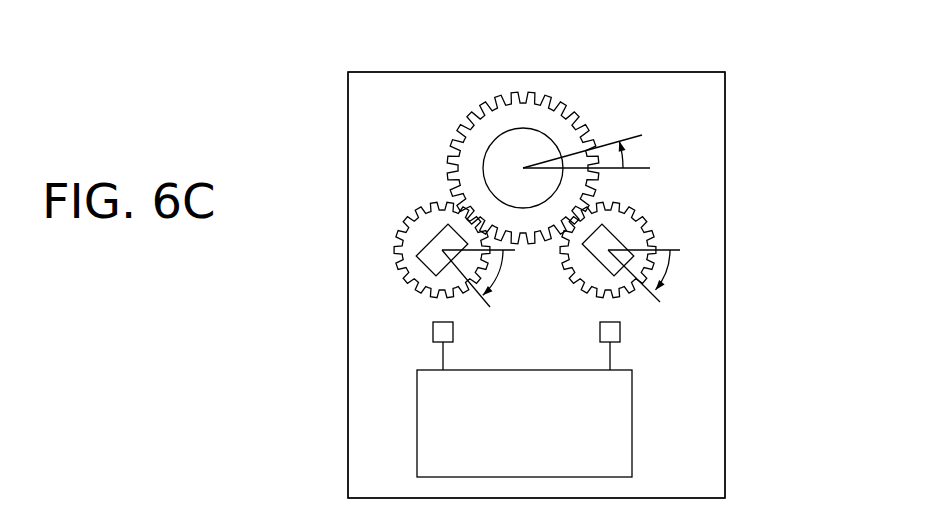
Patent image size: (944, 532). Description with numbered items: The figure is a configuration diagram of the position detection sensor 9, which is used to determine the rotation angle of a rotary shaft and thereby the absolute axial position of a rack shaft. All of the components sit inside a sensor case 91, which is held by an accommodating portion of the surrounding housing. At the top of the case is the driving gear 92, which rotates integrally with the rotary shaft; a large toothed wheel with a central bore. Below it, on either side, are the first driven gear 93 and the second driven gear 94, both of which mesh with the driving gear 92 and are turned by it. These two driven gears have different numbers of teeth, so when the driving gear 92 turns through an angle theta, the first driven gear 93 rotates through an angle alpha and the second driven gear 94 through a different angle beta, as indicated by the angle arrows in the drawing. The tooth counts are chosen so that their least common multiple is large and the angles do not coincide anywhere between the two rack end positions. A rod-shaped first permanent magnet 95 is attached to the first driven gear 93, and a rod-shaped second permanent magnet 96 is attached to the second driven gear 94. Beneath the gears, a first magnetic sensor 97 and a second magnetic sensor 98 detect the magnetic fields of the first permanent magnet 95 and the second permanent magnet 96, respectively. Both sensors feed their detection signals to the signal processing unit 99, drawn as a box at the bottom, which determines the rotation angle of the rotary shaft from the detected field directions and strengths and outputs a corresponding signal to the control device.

The position detection sensor 9 is at (372, 67).
The sensor case 91 is at (725, 121).
The driving gear 92 is at (562, 133).
The first driven gear 93 is at (427, 228).
The second driven gear 94 is at (627, 228).
The first permanent magnet 95 is at (423, 252).
The second permanent magnet 96 is at (620, 243).
The first magnetic sensor 97 is at (433, 330).
The second magnetic sensor 98 is at (620, 330).
The signal processing unit 99 is at (632, 404).